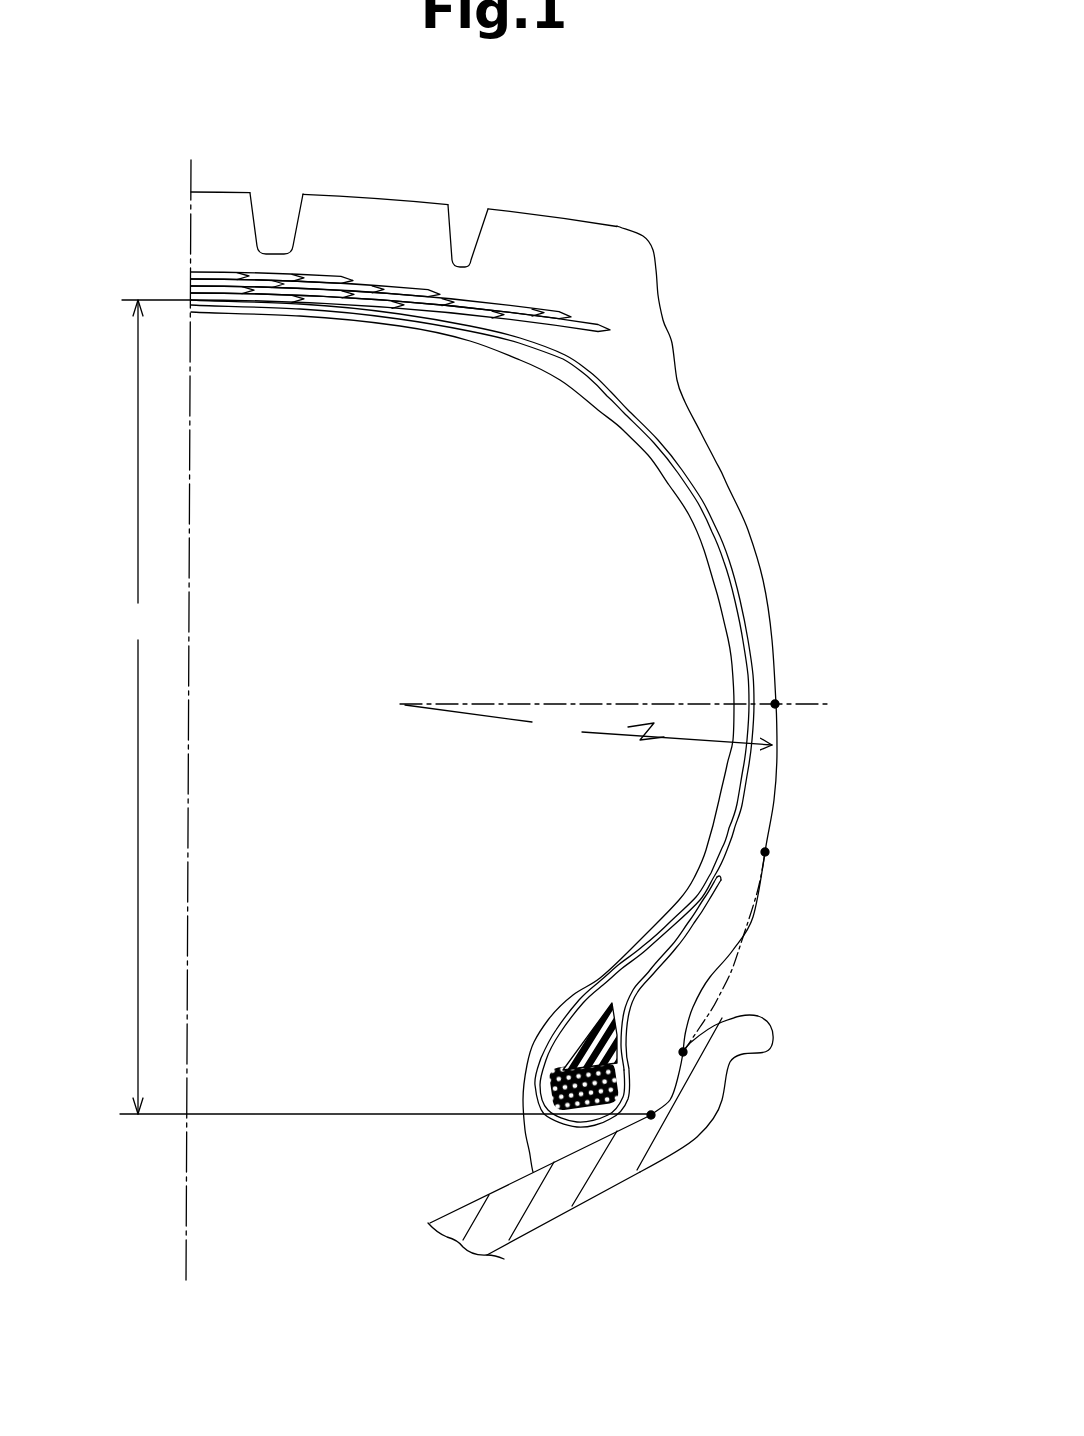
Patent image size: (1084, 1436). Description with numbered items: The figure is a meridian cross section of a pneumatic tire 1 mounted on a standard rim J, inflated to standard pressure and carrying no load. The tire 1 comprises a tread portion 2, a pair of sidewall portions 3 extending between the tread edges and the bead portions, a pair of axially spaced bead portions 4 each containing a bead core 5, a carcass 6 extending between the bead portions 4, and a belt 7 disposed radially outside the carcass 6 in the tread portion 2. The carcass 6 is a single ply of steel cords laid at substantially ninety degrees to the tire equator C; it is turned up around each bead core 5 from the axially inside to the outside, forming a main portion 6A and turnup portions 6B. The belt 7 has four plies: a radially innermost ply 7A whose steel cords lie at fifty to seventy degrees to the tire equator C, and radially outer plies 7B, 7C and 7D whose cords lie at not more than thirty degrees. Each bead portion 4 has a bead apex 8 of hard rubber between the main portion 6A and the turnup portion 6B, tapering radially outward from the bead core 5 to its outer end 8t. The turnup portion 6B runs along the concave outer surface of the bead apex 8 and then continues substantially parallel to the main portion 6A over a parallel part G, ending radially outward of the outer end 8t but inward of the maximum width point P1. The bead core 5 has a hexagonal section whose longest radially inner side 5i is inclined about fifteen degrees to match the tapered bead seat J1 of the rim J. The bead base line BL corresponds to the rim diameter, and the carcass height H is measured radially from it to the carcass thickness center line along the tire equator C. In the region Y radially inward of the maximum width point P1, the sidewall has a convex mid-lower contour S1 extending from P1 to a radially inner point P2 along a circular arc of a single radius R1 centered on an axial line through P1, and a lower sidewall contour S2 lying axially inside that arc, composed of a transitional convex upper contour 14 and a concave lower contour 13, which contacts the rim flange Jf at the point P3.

The tire 1 is at (733, 670).
The tread portion 2 is at (390, 190).
The sidewall portion 3 is at (778, 563).
The bead portion 4 is at (462, 795).
The bead core 5 is at (543, 1091).
The radially inner side of the bead core 5i is at (593, 1112).
The carcass 6 is at (472, 713).
The carcass main portion 6A is at (742, 787).
The carcass turnup portion 6B is at (682, 933).
The belt 7 is at (400, 370).
The radially innermost belt ply 7A is at (248, 413).
The radially outer belt ply 7B is at (418, 296).
The radially outer belt ply 7C is at (363, 286).
The radially outer belt ply 7D is at (327, 285).
The bead apex 8 is at (587, 1047).
The outer end of the bead apex 8t is at (612, 1003).
The concave lower contour 13 is at (707, 984).
The transitional convex upper contour 14 is at (770, 880).
The tire equator C is at (191, 703).
The carcass height H is at (156, 707).
The radius of the mid-lower sidewall contour R1 is at (588, 725).
The maximum width point P1 is at (777, 703).
The radially inner point P2 is at (788, 852).
The contact point P3 is at (652, 1120).
The mid-lower sidewall contour S1 is at (806, 707).
The lower sidewall contour S2 is at (806, 865).
The region Y is at (864, 755).
The parallel part G is at (688, 905).
The bead base line BL is at (280, 1118).
The standard rim J is at (636, 1142).
The tapered bead seat J1 is at (528, 1178).
The rim flange Jf is at (727, 1068).